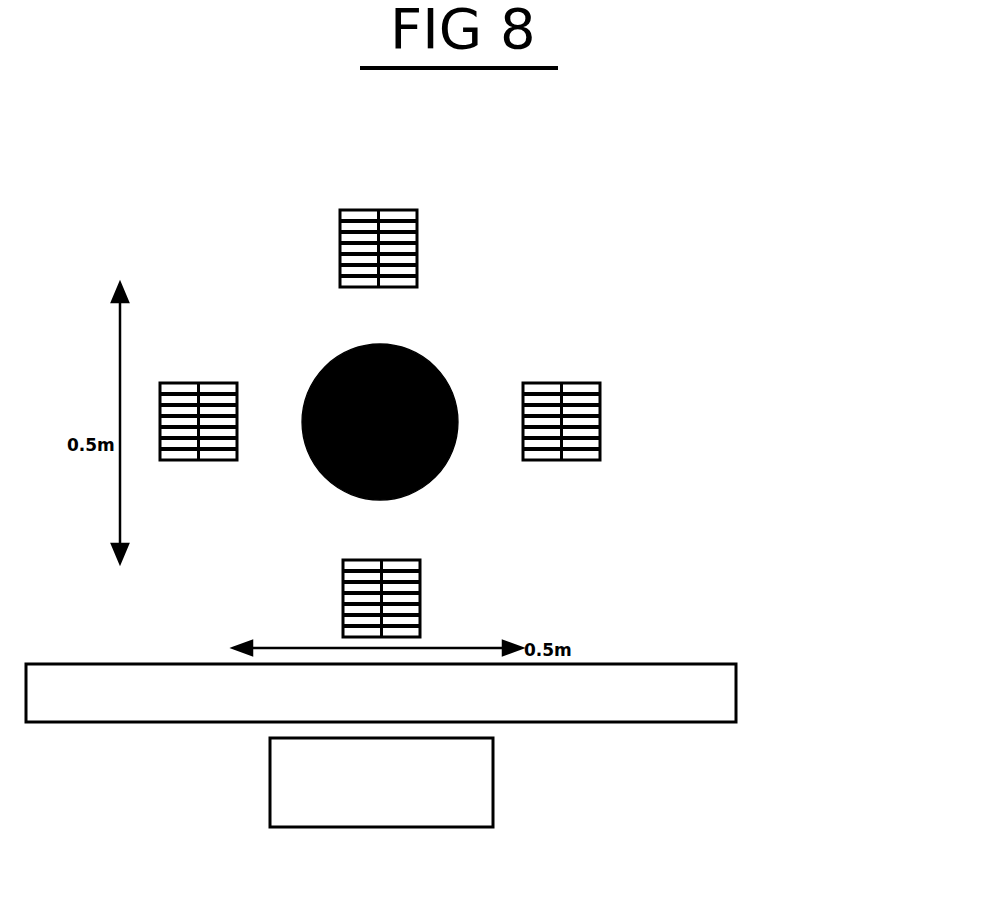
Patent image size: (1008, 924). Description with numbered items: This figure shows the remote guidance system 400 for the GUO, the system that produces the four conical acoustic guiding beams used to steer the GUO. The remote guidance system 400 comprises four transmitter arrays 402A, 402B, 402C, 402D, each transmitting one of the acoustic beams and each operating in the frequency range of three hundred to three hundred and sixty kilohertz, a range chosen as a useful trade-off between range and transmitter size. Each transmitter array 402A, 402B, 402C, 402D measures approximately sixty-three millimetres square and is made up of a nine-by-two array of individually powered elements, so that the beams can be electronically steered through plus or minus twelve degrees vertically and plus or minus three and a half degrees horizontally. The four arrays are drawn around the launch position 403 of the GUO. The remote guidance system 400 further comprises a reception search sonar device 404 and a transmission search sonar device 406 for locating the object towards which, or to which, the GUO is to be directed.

The remote guidance system 400 is at (775, 222).
The transmitter array 402A is at (402, 212).
The transmitter array 402B is at (583, 385).
The transmitter array 402C is at (418, 590).
The transmitter array 402D is at (172, 382).
The launch position of the GUO 403 is at (430, 355).
The reception search sonar device 404 is at (713, 700).
The transmission search sonar device 406 is at (475, 813).